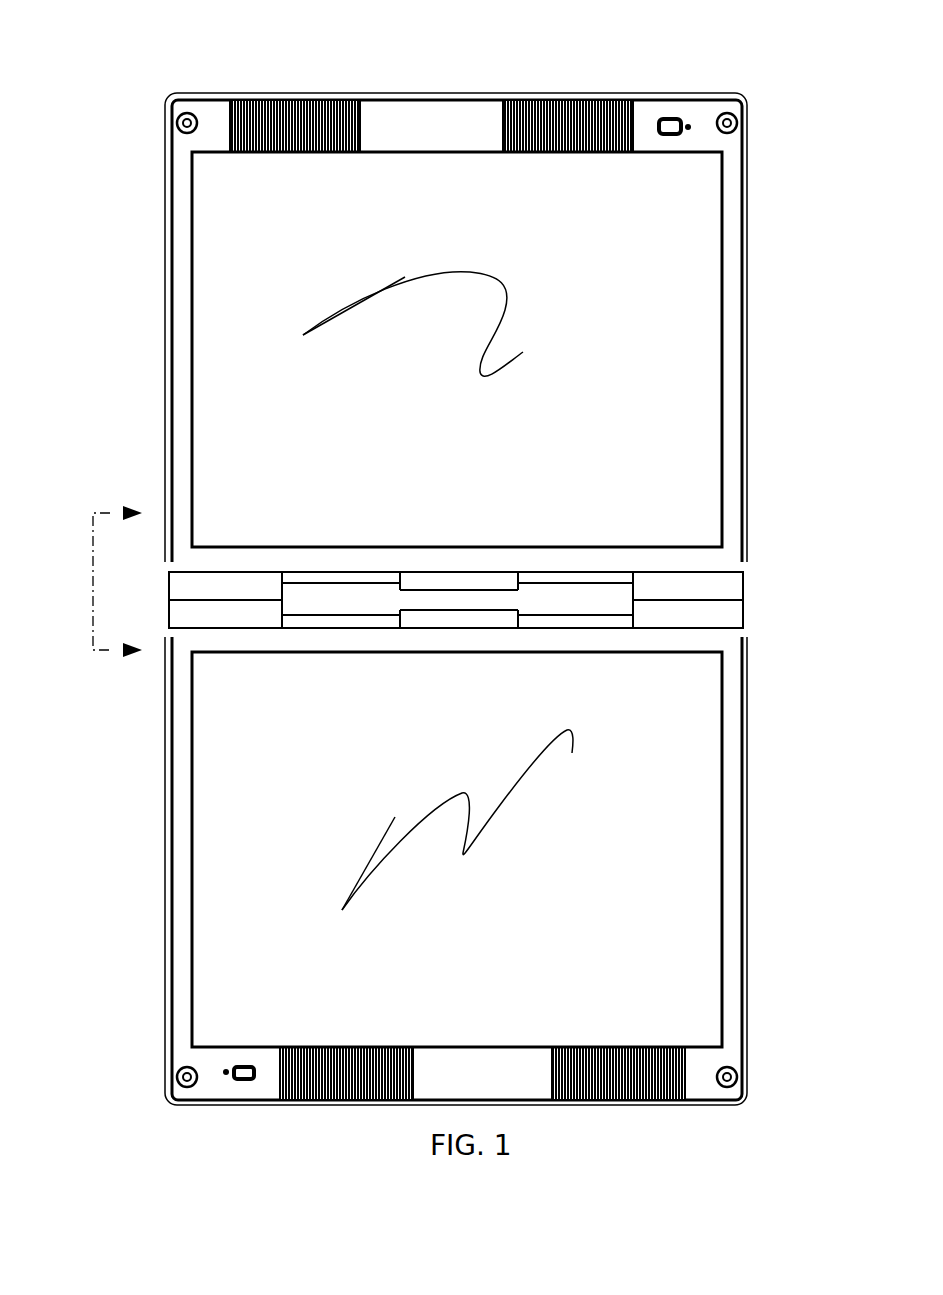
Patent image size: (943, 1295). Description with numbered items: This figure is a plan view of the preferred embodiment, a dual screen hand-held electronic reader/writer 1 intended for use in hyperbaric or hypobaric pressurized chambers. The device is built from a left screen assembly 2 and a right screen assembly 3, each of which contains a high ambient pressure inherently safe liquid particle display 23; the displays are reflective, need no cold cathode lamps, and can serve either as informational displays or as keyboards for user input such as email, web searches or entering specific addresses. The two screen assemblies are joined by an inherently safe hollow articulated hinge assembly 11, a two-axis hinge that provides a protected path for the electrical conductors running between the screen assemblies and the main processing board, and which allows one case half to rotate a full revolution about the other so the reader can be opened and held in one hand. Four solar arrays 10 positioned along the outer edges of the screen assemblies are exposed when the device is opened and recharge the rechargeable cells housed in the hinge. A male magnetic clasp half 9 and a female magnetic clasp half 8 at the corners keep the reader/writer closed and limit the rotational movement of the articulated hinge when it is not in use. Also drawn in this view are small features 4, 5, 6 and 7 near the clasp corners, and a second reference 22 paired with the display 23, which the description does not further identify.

The dual-screen electronic device 1 is at (393, 458).
The left screen assembly 2 is at (427, 327).
The right screen assembly 3 is at (420, 804).
The camera 4 is at (731, 69).
The indicator light 5 is at (744, 88).
The second camera 6 is at (273, 1104).
The second indicator light 7 is at (206, 1105).
The female magnetic clasp half 8 is at (463, 582).
The male magnetic clasp half 9 is at (454, 592).
The solar arrays 10 is at (457, 571).
The hollow articulated hinge assembly 11 is at (456, 535).
The display screen 22 is at (825, 237).
The liquid particle displays 23 is at (517, 644).